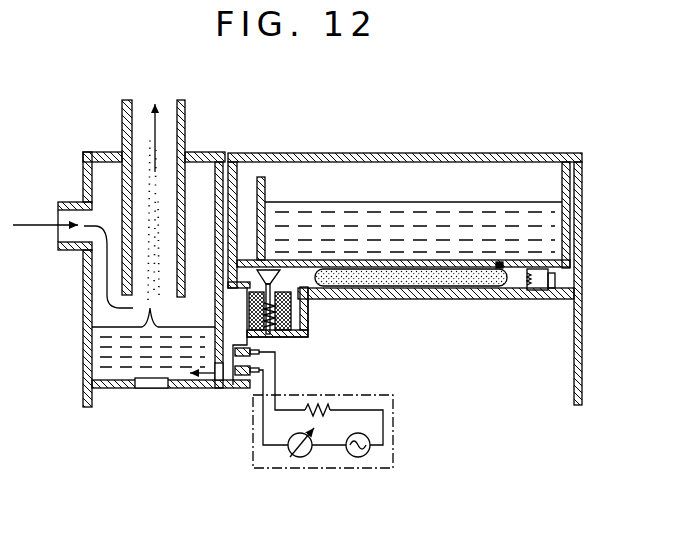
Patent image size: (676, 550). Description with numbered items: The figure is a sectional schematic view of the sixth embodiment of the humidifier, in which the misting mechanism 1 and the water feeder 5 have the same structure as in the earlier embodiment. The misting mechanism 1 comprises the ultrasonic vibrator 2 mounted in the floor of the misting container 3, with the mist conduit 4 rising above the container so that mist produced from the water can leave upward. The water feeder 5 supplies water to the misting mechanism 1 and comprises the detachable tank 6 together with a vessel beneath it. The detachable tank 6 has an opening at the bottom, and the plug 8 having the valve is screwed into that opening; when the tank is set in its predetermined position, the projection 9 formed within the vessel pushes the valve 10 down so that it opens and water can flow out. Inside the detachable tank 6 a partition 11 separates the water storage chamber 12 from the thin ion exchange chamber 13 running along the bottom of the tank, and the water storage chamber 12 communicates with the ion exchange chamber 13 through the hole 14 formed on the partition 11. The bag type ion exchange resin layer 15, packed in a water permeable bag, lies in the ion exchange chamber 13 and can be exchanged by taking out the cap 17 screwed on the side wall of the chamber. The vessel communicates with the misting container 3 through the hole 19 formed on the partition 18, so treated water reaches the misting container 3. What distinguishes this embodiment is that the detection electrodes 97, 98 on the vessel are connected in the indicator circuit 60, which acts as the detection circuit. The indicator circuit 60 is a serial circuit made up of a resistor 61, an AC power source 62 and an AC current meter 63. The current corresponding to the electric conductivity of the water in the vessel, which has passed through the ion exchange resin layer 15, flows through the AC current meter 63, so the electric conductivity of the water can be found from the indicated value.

The misting mechanism 1 is at (114, 399).
The ultrasonic vibrator 2 is at (150, 390).
The misting container 3 is at (106, 360).
The mist conduit 4 is at (184, 122).
The water feeder 5 is at (404, 300).
The detachable tank 6 is at (404, 156).
The plug 8 is at (292, 316).
The projection 9 is at (268, 332).
The valve 10 is at (305, 297).
The partition 11 is at (398, 259).
The water storage chamber 12 is at (507, 187).
The ion exchange chamber 13 is at (518, 291).
The hole 14 is at (498, 262).
The bag type ion exchange resin layer 15 is at (455, 296).
The cap 17 is at (555, 279).
The partition 18 is at (215, 282).
The hole 19 is at (214, 386).
The indicator circuit 60 is at (394, 438).
The resistor 61 is at (320, 407).
The AC power source 62 is at (358, 458).
The AC current meter 63 is at (304, 458).
The detection electrode 97 is at (238, 357).
The detection electrode 98 is at (243, 376).